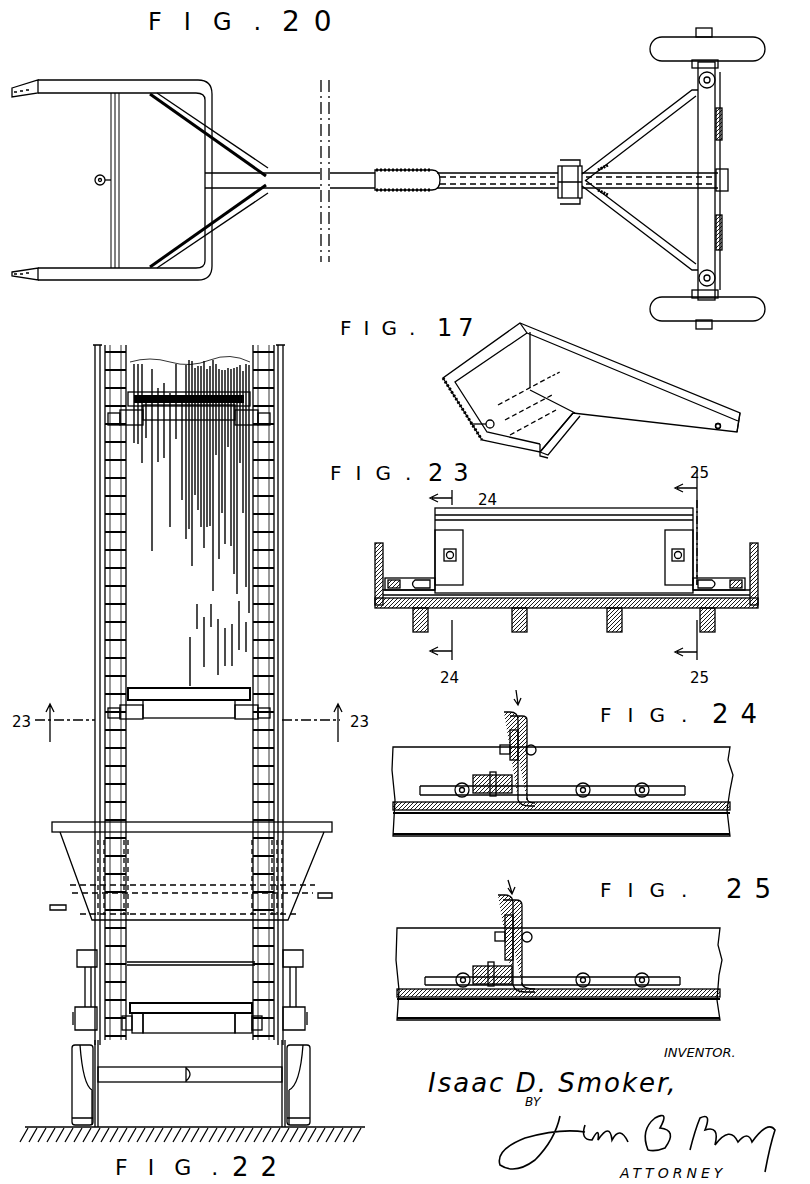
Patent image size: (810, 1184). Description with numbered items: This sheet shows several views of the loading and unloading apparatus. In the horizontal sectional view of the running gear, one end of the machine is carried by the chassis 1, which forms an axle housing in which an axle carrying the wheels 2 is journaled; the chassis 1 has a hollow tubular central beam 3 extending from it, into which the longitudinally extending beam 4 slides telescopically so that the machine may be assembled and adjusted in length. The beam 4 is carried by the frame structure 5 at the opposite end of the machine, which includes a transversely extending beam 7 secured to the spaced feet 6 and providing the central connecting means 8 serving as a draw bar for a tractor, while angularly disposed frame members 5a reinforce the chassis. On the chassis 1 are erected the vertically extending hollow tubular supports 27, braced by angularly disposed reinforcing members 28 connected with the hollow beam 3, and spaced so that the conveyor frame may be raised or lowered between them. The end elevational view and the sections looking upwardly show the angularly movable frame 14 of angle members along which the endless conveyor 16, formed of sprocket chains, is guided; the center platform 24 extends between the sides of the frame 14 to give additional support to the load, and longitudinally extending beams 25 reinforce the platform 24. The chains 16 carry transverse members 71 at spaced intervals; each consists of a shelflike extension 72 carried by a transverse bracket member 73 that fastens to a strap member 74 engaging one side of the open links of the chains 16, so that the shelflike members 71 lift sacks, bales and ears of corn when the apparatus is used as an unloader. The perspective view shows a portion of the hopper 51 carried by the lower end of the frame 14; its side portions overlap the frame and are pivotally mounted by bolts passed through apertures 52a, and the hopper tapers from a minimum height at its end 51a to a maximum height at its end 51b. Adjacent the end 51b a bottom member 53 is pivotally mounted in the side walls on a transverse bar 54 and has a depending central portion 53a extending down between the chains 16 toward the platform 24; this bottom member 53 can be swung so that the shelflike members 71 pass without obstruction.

In FIG. 20, the chassis 1 is at (712, 155).
In FIG. 20, the wheels 2 is at (660, 52).
In FIG. 20, the central beam 3 is at (648, 188).
In FIG. 20, the longitudinally extending beam 4 is at (412, 181).
In FIG. 20, the frame structure (chassis) 5 is at (176, 82).
In FIG. 20, the angularly disposed frame members 5a is at (230, 150).
In FIG. 22, the supporting feet 6 is at (90, 1102).
In FIG. 20, the transversely extending beam 7 is at (119, 205).
In FIG. 22, the transversely extending beam 7 is at (238, 1083).
In FIG. 20, the central connecting means 8 is at (94, 180).
In FIG. 22, the central connecting means 8 is at (188, 1083).
In FIG. 22, the angularly movable frame 14 is at (280, 458).
In FIG. 23, the angularly movable frame 14 is at (376, 565).
In FIG. 24, the angularly movable frame 14 is at (720, 775).
In FIG. 25, the angularly movable frame 14 is at (400, 958).
In FIG. 22, the endless conveyor (sprocket chains) 16 is at (264, 536).
In FIG. 23, the endless conveyor (sprocket chains) 16 is at (740, 578).
In FIG. 24, the endless conveyor (sprocket chains) 16 is at (622, 786).
In FIG. 25, the endless conveyor (sprocket chains) 16 is at (615, 978).
In FIG. 23, the center platform 24 is at (562, 609).
In FIG. 24, the center platform 24 is at (556, 812).
In FIG. 25, the center platform 24 is at (558, 999).
In FIG. 23, the longitudinally extending beams 25 is at (622, 620).
In FIG. 24, the longitudinally extending beams 25 is at (620, 826).
In FIG. 25, the longitudinally extending beams 25 is at (617, 1010).
In FIG. 20, the vertically extending hollow tubular supports 27 is at (699, 80).
In FIG. 20, the angularly disposed reinforcing members 28 is at (606, 165).
In FIG. 17, the hopper 51 is at (600, 383).
In FIG. 22, the hopper 51 is at (175, 842).
In FIG. 17, the minimum height end of hopper 51a is at (705, 410).
In FIG. 17, the maximum height end of hopper 51b is at (530, 340).
In FIG. 17, the apertures 52a is at (740, 415).
In FIG. 17, the bottom member 53 is at (566, 430).
In FIG. 17, the depending central portion 53a is at (546, 455).
In FIG. 17, the transverse bar 54 is at (490, 418).
In FIG. 22, the transverse bar 54 is at (306, 893).
In FIG. 22, the transverse members (shelflike members) 71 is at (160, 405).
In FIG. 24, the transverse members (shelflike members) 71 is at (505, 692).
In FIG. 25, the transverse members (shelflike members) 71 is at (501, 880).
In FIG. 23, the shelflike extensions 72 is at (565, 530).
In FIG. 24, the shelflike extensions 72 is at (530, 716).
In FIG. 25, the shelflike extensions 72 is at (528, 900).
In FIG. 23, the transverse bracket members 73 is at (444, 542).
In FIG. 24, the transverse bracket members 73 is at (505, 742).
In FIG. 25, the transverse bracket members 73 is at (504, 922).
In FIG. 23, the strap members 74 is at (705, 578).
In FIG. 24, the strap members 74 is at (480, 795).
In FIG. 25, the strap members 74 is at (484, 986).